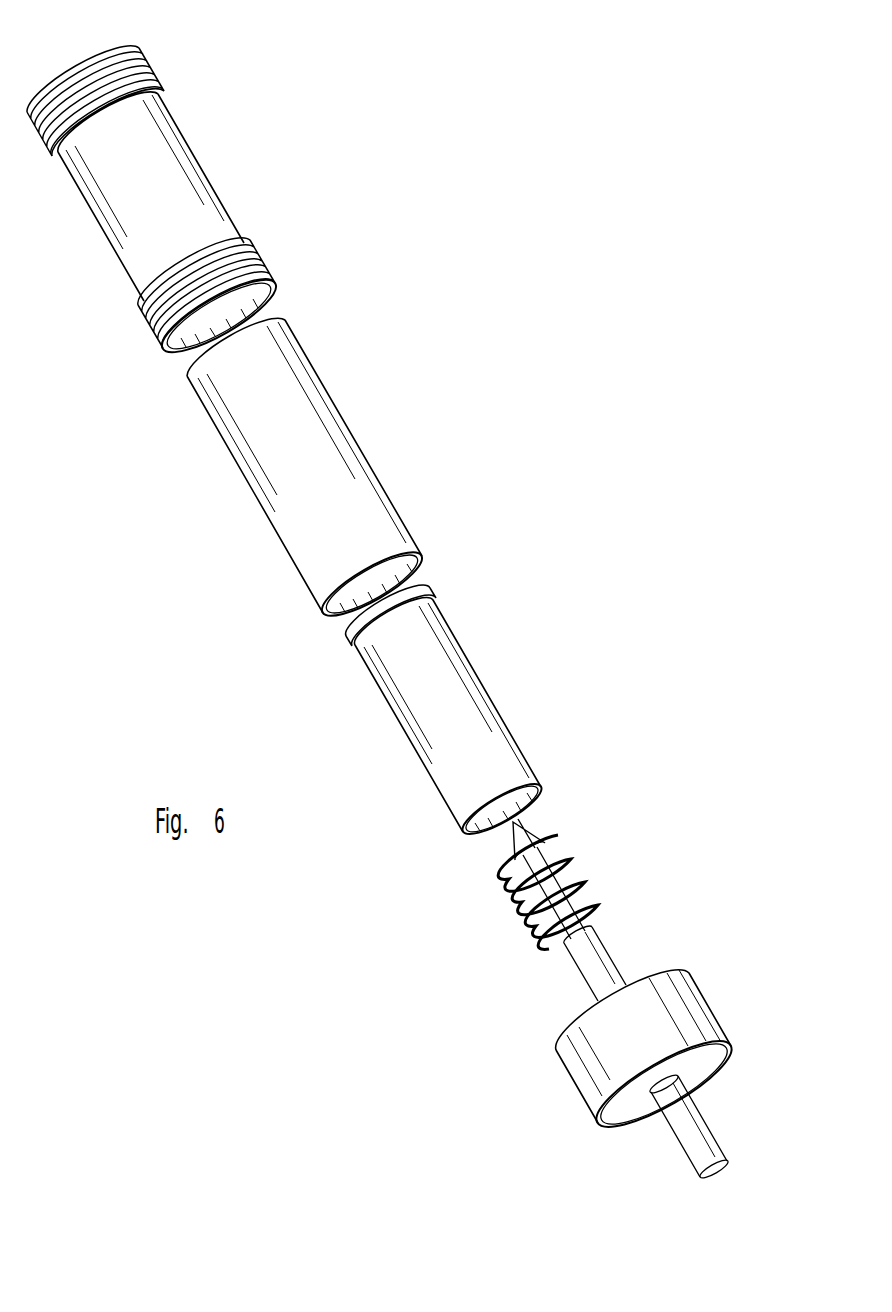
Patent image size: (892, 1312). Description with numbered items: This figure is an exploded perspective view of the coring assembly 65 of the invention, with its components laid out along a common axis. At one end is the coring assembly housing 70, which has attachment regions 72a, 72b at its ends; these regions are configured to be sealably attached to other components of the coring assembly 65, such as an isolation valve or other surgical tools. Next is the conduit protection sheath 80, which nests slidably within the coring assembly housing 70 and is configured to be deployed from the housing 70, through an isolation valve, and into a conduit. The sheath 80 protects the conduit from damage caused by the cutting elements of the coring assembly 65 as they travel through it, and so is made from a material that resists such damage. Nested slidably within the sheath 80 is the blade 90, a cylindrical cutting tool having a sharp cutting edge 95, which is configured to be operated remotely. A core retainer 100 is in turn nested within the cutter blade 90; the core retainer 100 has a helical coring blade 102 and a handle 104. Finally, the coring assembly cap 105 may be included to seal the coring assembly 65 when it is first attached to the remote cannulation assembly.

The coring assembly 65 is at (398, 605).
The coring assembly housing 70 is at (176, 197).
The attachment region 72a is at (150, 33).
The attachment region 72b is at (262, 220).
The conduit protection sheath 80 is at (332, 448).
The blade 90 is at (464, 689).
The cutting edge 95 is at (432, 593).
The core retainer 100 is at (633, 993).
The helical coring blade 102 is at (570, 852).
The handle 104 is at (603, 943).
The coring assembly cap 105 is at (678, 1010).